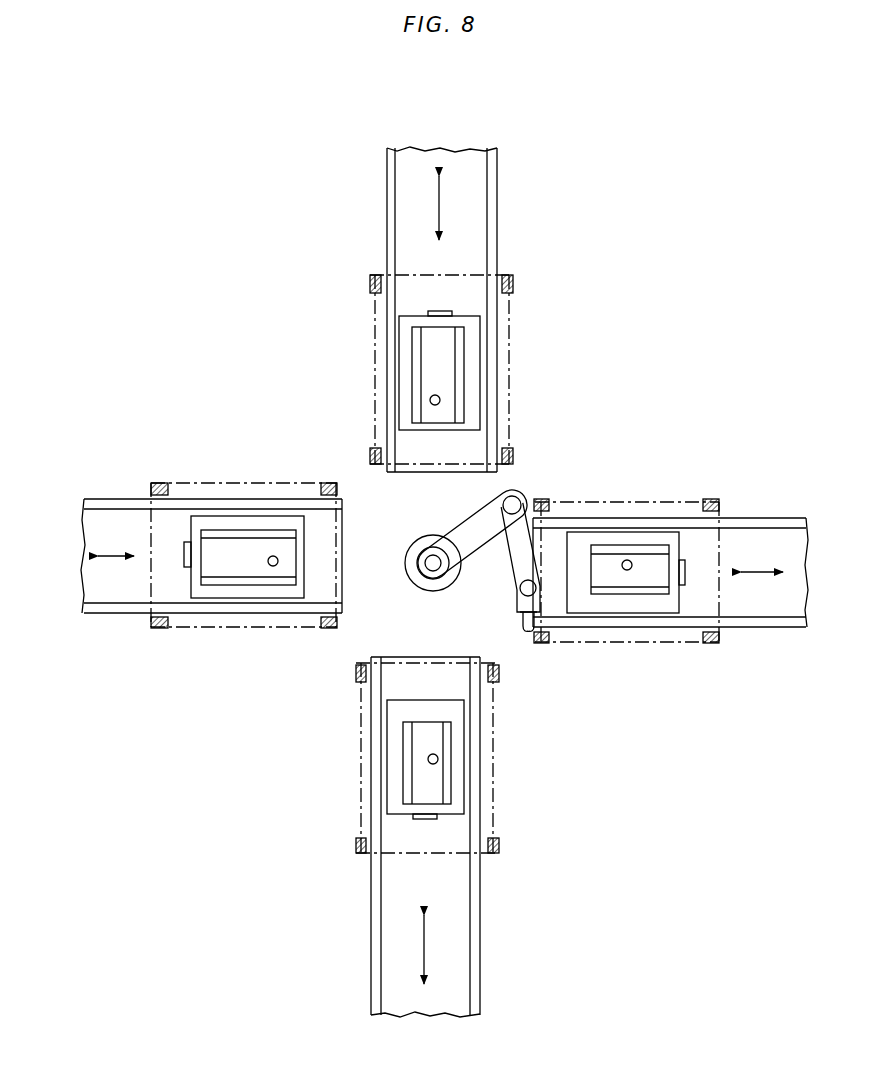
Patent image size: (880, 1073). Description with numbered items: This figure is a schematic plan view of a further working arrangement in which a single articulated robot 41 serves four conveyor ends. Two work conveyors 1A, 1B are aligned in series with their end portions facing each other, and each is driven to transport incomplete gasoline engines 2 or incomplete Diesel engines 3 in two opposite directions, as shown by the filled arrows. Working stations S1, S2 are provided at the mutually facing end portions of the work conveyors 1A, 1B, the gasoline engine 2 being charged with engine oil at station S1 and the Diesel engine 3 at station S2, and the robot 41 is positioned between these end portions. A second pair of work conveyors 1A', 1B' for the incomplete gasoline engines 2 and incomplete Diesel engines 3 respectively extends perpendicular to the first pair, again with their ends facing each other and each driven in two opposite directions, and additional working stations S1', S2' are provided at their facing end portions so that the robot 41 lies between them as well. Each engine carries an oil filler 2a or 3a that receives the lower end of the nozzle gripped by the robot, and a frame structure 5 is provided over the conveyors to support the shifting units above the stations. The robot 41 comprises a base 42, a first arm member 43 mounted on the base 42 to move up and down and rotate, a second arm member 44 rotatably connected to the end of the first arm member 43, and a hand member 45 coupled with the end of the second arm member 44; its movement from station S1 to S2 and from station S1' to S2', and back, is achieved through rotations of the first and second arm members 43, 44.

The work conveyor 1A' is at (407, 309).
The work conveyor 1A is at (211, 584).
The work conveyor 1B is at (670, 544).
The work conveyor 1B' is at (458, 837).
The working station S1' is at (405, 363).
The working station S1 is at (243, 591).
The working station S2 is at (627, 537).
The working station S2' is at (466, 758).
The incomplete gasoline engine 2 is at (426, 360).
The oil filler 2a is at (430, 400).
The incomplete Diesel engine 3 is at (600, 560).
The oil filler 3a is at (627, 560).
The frame structure 5 is at (325, 483).
The robot 41 is at (408, 585).
The base 42 is at (412, 550).
The first arm member 43 is at (460, 530).
The second arm member 44 is at (513, 565).
The hand member 45 is at (520, 626).